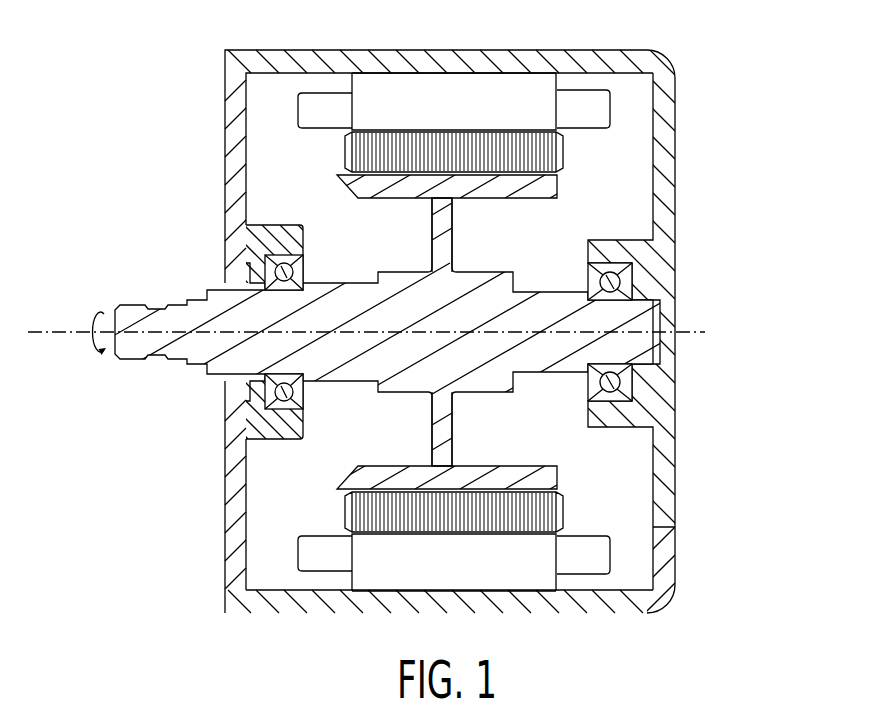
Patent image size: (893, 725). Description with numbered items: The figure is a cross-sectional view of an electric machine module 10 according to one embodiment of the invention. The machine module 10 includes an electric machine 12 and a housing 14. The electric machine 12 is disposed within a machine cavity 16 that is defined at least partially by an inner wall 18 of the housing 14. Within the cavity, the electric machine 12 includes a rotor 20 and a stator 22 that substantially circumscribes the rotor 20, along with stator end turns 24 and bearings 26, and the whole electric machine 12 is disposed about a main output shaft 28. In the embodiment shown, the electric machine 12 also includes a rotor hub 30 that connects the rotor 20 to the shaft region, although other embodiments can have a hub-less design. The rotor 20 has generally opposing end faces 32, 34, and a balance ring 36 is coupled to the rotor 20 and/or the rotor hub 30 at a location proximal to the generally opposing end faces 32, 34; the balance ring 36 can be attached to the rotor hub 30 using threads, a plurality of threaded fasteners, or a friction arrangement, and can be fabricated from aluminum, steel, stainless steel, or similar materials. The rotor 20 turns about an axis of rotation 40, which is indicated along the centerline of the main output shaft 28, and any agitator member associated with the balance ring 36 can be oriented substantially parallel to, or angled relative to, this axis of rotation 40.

The electric machine module 10 is at (475, 323).
The electric machine 12 is at (618, 140).
The housing 14 is at (665, 455).
The machine cavity 16 is at (435, 318).
The inner wall 18 is at (527, 74).
The rotor 20 is at (378, 148).
The stator 22 is at (408, 90).
The stator end turns 24 is at (308, 100).
The bearings 26 is at (283, 260).
The main output shaft 28 is at (183, 313).
The rotor hub 30 is at (443, 228).
The end face 32 is at (343, 173).
The end face 34 is at (563, 182).
The balance ring 36 is at (345, 160).
The axis of rotation 40 is at (63, 332).